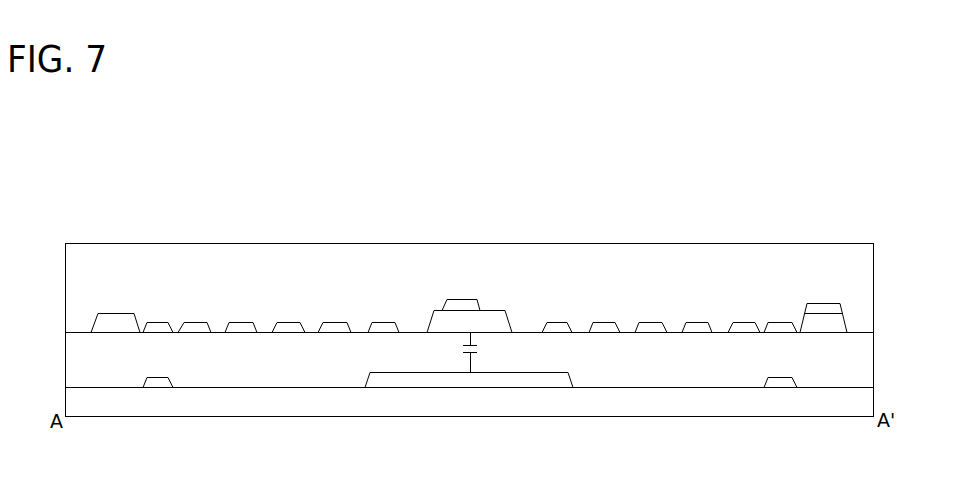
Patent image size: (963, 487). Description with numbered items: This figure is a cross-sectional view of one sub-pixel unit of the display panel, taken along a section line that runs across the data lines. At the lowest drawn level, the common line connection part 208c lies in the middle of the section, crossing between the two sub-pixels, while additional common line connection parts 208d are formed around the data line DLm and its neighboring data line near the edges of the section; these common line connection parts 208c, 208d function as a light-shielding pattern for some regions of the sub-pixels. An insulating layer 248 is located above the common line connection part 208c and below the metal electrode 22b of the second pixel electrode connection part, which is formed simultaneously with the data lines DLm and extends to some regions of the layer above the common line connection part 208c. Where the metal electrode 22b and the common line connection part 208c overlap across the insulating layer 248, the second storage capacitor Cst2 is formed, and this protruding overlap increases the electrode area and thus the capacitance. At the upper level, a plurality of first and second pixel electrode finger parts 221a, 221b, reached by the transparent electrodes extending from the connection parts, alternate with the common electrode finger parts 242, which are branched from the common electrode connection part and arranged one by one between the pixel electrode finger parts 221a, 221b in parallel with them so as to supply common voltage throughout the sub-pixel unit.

The common electrode finger parts 242 is at (468, 302).
The metal electrode 22b is at (494, 320).
The second storage capacitor Cst2 is at (490, 353).
The data line DLm is at (110, 327).
The common line connection part 208d is at (160, 387).
The insulating layer 248 is at (212, 377).
The first pixel electrode finger parts 221a is at (195, 328).
The common line connection part 208c is at (485, 387).
The second pixel electrode finger parts 221b is at (743, 328).